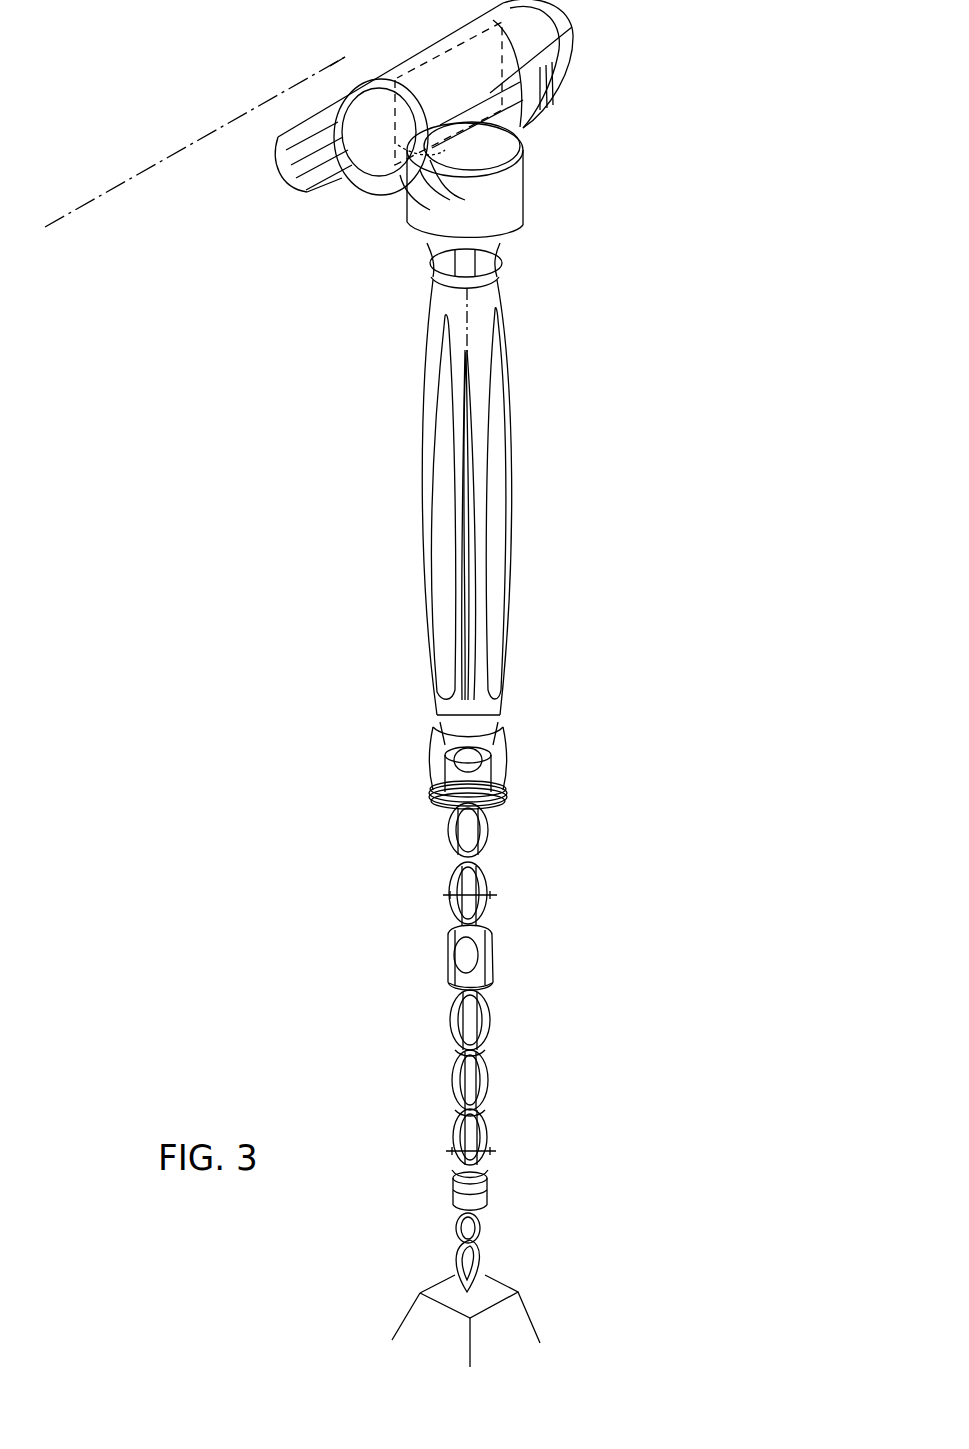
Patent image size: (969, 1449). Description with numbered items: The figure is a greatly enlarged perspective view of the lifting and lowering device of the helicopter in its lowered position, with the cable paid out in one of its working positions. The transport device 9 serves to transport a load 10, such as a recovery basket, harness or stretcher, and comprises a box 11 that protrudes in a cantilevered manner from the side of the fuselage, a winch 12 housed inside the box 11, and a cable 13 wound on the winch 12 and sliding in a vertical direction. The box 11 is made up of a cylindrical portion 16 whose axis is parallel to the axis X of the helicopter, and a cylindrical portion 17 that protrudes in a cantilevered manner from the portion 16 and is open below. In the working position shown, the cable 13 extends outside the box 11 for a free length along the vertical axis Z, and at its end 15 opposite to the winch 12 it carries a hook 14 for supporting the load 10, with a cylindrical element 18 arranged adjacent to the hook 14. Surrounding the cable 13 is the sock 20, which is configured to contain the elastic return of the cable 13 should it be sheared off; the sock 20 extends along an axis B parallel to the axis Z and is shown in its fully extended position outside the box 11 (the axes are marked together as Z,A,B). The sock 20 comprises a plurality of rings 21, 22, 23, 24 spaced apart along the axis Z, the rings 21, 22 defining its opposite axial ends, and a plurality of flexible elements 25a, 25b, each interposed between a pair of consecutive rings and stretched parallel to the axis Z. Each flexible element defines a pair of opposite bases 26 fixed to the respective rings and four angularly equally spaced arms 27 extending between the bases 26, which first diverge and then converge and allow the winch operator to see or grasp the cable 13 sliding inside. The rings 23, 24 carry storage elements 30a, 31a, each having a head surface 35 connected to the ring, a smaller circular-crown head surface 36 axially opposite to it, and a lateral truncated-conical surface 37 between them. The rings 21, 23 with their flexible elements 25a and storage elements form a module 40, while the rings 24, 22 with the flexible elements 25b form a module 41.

The transport device 9 is at (585, 178).
The load 10 is at (517, 1321).
The box 11 is at (281, 70).
The winch 12 is at (445, 62).
The cable 13 is at (467, 745).
The hook 14 is at (455, 1248).
The end 15 is at (480, 1215).
The cylindrical portion 16 is at (577, 22).
The cylindrical portion 17 is at (407, 222).
The cylindrical element 18 is at (480, 1200).
The sock 20 is at (353, 483).
The ring 21 is at (427, 277).
The ring 22 is at (458, 1162).
The ring 23 is at (440, 712).
The ring 24 is at (462, 1050).
The flexible element 25a is at (503, 676).
The flexible element 25b is at (500, 1163).
The base 26 is at (490, 296).
The arm 27 is at (490, 605).
The storage element 30a is at (405, 753).
The storage element 31a is at (437, 992).
The head surface 35 is at (438, 797).
The head surface 36 is at (500, 733).
The lateral truncated-conical surface 37 is at (500, 788).
The module 40 is at (636, 766).
The module 41 is at (617, 1189).
The axis X is at (128, 164).
The axes Z, A, B Z,A,B is at (468, 353).